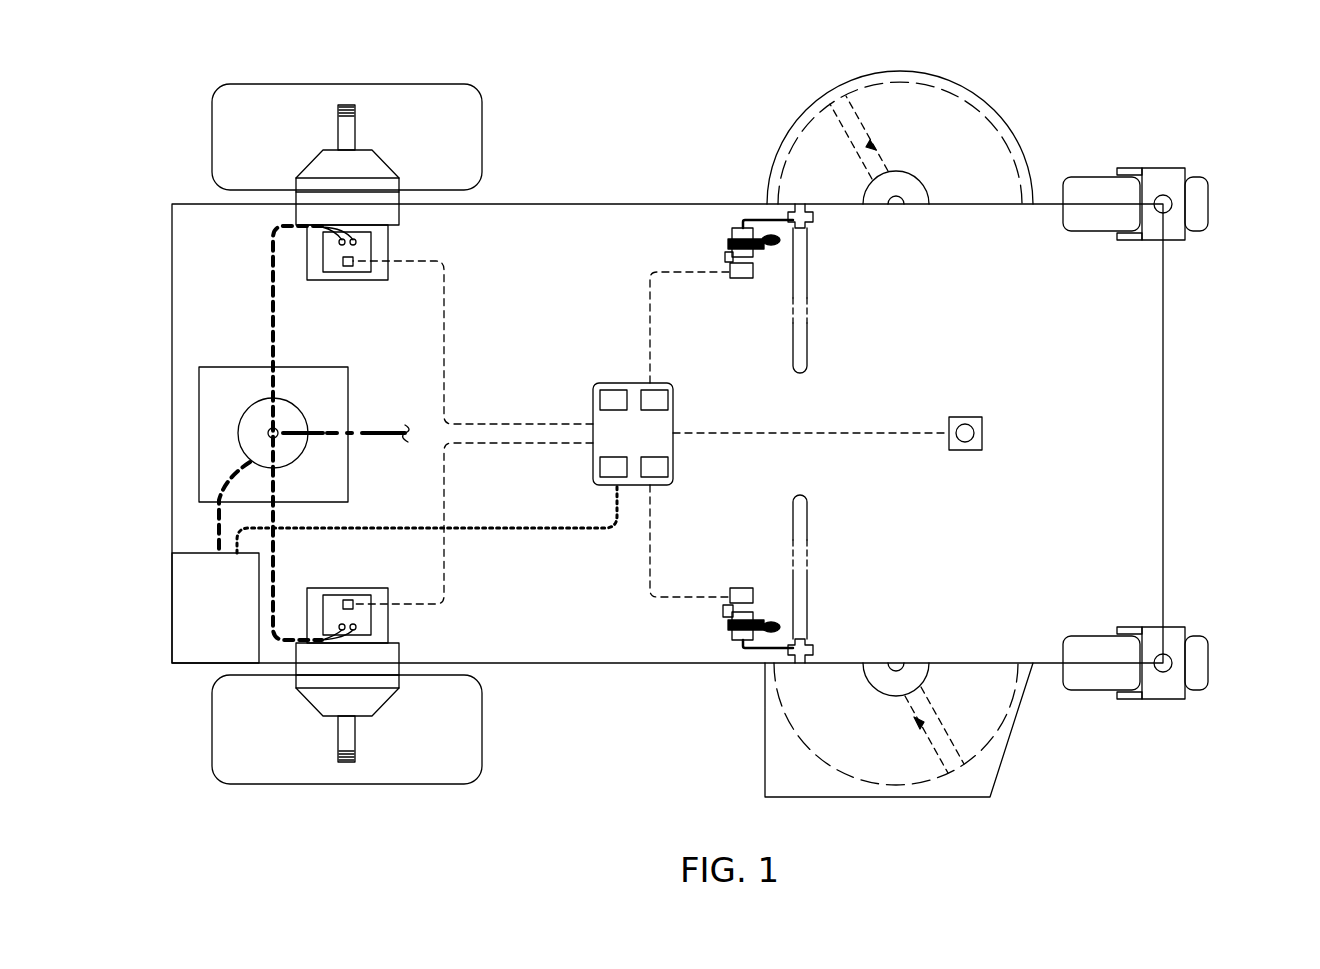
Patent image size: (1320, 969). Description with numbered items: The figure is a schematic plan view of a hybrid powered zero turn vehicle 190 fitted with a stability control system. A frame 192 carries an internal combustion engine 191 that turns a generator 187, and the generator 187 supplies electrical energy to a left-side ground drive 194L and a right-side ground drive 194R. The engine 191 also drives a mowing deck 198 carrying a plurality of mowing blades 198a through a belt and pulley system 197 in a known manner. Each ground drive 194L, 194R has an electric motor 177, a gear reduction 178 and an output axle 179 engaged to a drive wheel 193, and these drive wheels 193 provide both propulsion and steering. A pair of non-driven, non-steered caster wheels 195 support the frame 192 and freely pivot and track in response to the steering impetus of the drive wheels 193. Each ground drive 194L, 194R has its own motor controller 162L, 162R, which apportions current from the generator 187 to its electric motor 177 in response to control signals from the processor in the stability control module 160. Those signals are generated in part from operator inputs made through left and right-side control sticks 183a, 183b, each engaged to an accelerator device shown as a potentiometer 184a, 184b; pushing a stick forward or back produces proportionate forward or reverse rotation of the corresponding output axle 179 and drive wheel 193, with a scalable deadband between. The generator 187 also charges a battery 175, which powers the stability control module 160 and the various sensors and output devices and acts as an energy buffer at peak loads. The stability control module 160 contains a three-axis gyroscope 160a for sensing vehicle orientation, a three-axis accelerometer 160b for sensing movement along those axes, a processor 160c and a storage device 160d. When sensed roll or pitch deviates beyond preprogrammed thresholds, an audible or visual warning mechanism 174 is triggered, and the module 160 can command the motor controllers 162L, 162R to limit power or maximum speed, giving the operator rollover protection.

The zero turn vehicle 190 is at (160, 105).
The frame 192 is at (573, 203).
The drive wheel 193 is at (308, 84).
The left-side ground drive 194L is at (345, 433).
The right-side ground drive 194R is at (284, 703).
The output axle 179 is at (355, 123).
The gear reduction 178 is at (387, 172).
The electric motor 177 is at (388, 243).
The motor controller 162L is at (333, 266).
The motor controller 162R is at (333, 609).
The generator 187 is at (248, 409).
The belt and pulley system 197 is at (384, 432).
The internal combustion engine 191 is at (347, 494).
The battery 175 is at (238, 617).
The stability control module 160 is at (634, 435).
The 3-axis gyroscope 160a is at (600, 400).
The 3-axis accelerometer 160b is at (667, 400).
The processor 160c is at (600, 467).
The storage device 160d is at (667, 467).
The potentiometer 184a is at (730, 268).
The potentiometer 184b is at (730, 597).
The left-side control stick 183a is at (807, 345).
The right-side control stick 183b is at (807, 522).
The mowing deck 198 is at (899, 420).
The mowing blade 198a is at (868, 122).
The caster wheel 195 is at (1208, 203).
The warning mechanism 174 is at (975, 433).